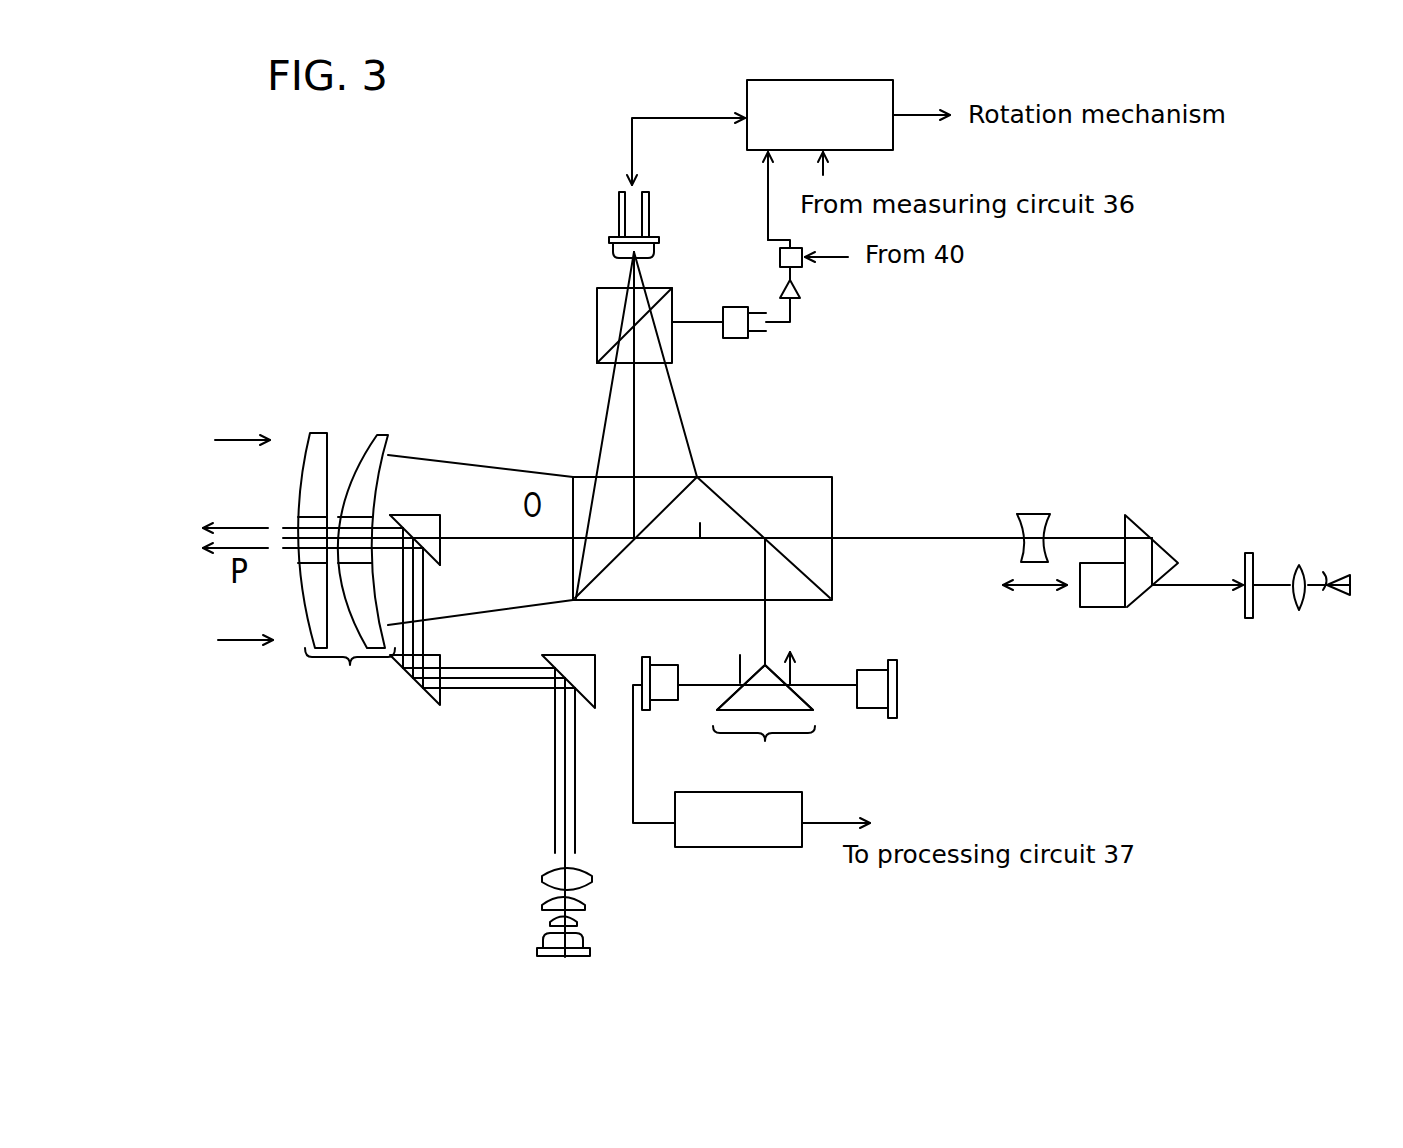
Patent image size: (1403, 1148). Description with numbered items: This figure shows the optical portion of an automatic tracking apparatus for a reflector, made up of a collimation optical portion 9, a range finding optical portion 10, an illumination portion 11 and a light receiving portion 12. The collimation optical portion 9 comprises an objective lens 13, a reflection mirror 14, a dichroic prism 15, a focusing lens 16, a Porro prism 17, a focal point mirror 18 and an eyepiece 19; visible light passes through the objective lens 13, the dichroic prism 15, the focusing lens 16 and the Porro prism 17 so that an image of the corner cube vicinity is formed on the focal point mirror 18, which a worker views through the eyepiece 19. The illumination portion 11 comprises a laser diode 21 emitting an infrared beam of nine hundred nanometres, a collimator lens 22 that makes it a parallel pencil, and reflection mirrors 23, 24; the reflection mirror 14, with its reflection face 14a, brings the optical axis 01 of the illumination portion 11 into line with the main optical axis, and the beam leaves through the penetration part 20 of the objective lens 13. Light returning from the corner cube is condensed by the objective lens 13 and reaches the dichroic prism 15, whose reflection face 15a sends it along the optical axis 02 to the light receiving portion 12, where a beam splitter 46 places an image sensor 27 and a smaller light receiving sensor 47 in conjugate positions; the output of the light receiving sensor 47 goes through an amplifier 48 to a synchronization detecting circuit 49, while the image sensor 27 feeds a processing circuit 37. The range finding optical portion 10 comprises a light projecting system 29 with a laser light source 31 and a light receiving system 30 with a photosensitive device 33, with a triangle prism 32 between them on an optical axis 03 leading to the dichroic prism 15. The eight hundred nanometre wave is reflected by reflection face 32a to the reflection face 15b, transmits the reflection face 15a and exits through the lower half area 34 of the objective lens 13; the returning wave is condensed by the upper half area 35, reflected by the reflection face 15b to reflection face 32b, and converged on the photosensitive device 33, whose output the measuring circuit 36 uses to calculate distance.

The collimation optical portion 9 is at (968, 505).
The range finding optical portion 10 is at (764, 757).
The illumination portion 11 is at (482, 762).
The light receiving portion 12 is at (592, 287).
The objective lens 13 is at (350, 674).
The reflection mirror 14 is at (431, 513).
The reflection face 14a is at (440, 565).
The dichroic prism 15 is at (812, 508).
The reflection face 15a is at (672, 504).
The reflection face 15b is at (735, 512).
The focusing lens 16 is at (1038, 512).
The Porro prism 17 is at (1113, 607).
The focal point mirror 18 is at (1256, 551).
The eyepiece 19 is at (1298, 612).
The penetration part 20 is at (350, 531).
The laser diode 21 is at (592, 952).
The collimator lens 22 is at (522, 870).
The reflection mirror 23 is at (572, 660).
The reflection mirror 24 is at (435, 708).
The image sensor 27 is at (655, 235).
The light projecting system 29 is at (838, 663).
The light receiving system 30 is at (695, 668).
The laser light source 31 is at (875, 668).
The triangle prism 32 is at (815, 715).
The reflection face 32a is at (817, 703).
The reflection face 32b is at (722, 700).
The photosensitive device 33 is at (667, 702).
The lower half area 34 is at (312, 628).
The upper half area 35 is at (370, 440).
The measuring circuit 36 is at (770, 847).
The processing circuit 37 is at (893, 92).
The beam splitter 46 is at (597, 313).
The light receiving sensor 47 is at (735, 307).
The amplifier 48 is at (803, 290).
The synchronization detecting circuit 49 is at (803, 265).
The optical axis O1 01 is at (560, 735).
The optical axis O2 02 is at (637, 392).
The optical axis O3 03 is at (767, 622).